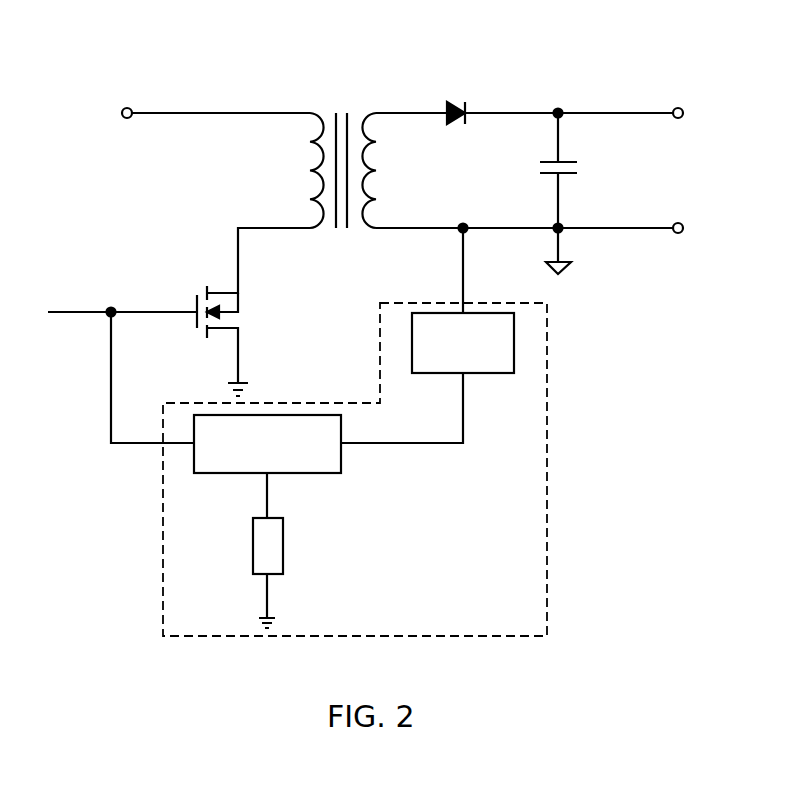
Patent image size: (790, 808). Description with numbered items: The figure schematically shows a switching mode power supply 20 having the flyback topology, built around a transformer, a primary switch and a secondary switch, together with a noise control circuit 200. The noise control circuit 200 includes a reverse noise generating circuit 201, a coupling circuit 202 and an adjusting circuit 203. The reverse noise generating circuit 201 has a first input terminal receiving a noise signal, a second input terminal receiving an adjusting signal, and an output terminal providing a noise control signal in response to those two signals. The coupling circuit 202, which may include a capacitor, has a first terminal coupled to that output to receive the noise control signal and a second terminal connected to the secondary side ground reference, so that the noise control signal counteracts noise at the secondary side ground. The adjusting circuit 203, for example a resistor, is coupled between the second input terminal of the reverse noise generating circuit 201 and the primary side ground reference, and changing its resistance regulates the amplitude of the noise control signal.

The switching mode power supply 20 is at (657, 50).
The noise control circuit 200 is at (523, 624).
The reverse noise generating circuit 201 is at (267, 444).
The coupling circuit 202 is at (463, 343).
The adjusting circuit 203 is at (284, 561).